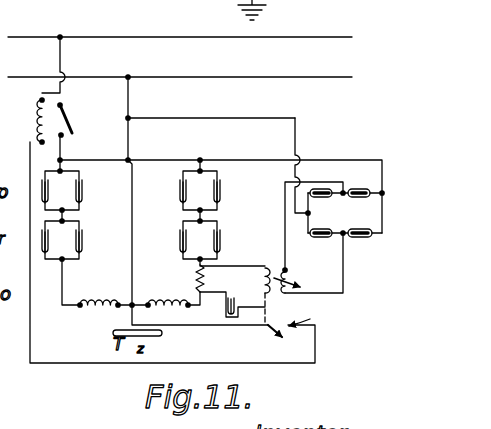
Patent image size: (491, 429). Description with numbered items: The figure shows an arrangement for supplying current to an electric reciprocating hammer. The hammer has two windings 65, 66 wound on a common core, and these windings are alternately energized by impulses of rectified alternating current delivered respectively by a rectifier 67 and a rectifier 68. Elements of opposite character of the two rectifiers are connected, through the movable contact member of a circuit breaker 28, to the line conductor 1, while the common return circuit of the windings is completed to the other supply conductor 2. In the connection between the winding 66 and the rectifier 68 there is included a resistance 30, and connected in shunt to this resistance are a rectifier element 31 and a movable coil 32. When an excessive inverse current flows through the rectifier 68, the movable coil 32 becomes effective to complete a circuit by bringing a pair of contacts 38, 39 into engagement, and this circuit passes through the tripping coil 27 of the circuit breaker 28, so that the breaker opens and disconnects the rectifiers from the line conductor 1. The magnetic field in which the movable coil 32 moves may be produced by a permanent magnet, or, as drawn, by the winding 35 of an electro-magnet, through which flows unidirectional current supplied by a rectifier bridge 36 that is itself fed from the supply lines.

The line conductor 1 is at (155, 36).
The supply conductor 2 is at (180, 77).
The tripping coil 27 is at (38, 118).
The circuit breaker 28 is at (75, 119).
The resistance 30 is at (205, 282).
The rectifier element 31 is at (233, 309).
The movable coil 32 is at (251, 266).
The winding of electro-magnet 35 is at (291, 276).
The rectifier bridge 36 is at (343, 212).
The contact 38 is at (272, 338).
The contact 39 is at (307, 314).
The winding 65 is at (103, 300).
The winding 66 is at (162, 301).
The rectifier 67 is at (82, 233).
The rectifier 68 is at (219, 190).